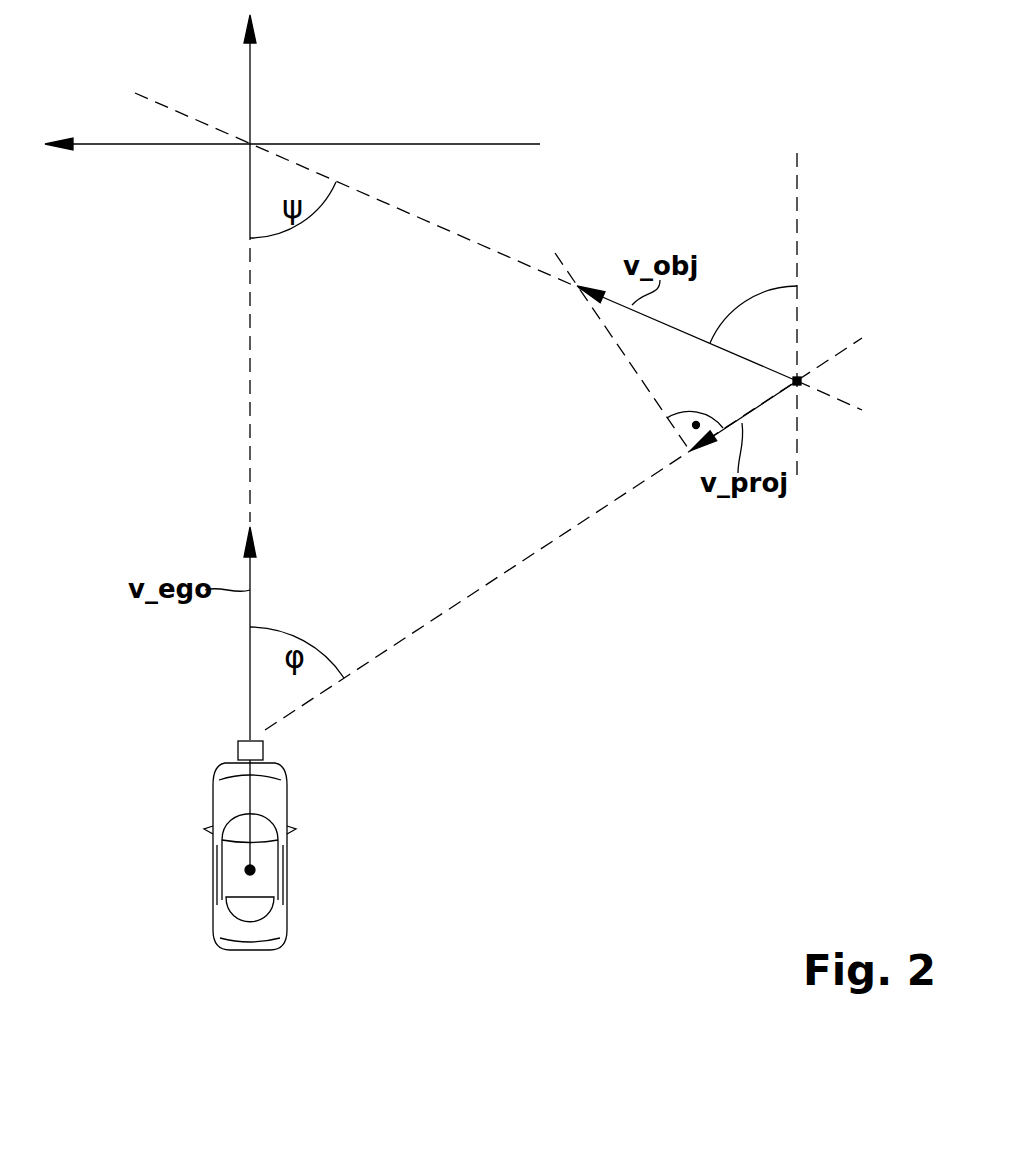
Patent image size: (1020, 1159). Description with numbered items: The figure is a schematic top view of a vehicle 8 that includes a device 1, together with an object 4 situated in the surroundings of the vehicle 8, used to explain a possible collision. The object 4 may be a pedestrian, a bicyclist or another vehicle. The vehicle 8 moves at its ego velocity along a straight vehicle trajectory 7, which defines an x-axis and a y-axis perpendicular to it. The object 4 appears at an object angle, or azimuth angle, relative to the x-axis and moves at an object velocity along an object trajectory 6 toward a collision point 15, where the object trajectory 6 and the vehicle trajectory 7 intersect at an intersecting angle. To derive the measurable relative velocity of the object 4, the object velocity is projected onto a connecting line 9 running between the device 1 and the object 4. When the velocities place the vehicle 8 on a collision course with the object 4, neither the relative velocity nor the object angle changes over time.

The device 1 is at (238, 752).
The object 4 is at (800, 377).
The object trajectory 6 is at (480, 243).
The vehicle trajectory 7 is at (250, 408).
The vehicle 8 is at (288, 863).
The connecting line 9 is at (492, 587).
The collision point 15 is at (265, 128).